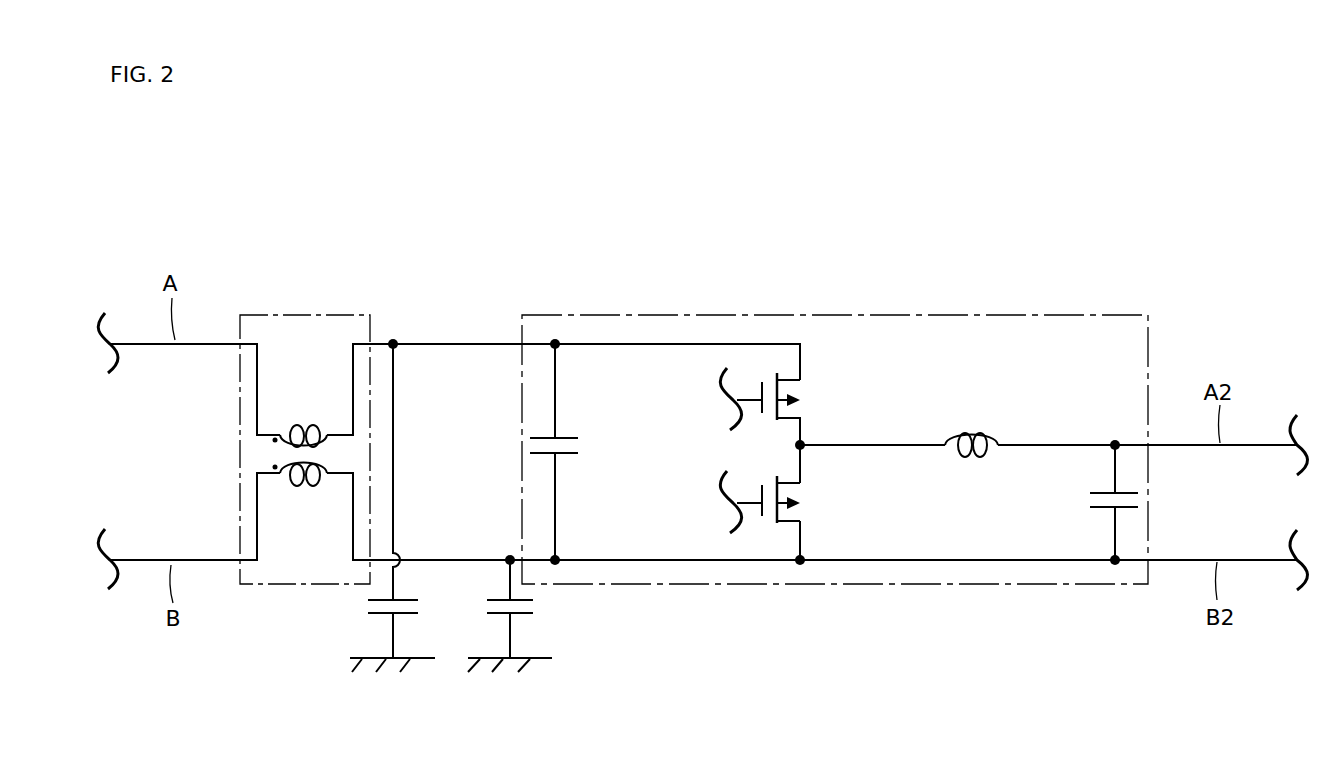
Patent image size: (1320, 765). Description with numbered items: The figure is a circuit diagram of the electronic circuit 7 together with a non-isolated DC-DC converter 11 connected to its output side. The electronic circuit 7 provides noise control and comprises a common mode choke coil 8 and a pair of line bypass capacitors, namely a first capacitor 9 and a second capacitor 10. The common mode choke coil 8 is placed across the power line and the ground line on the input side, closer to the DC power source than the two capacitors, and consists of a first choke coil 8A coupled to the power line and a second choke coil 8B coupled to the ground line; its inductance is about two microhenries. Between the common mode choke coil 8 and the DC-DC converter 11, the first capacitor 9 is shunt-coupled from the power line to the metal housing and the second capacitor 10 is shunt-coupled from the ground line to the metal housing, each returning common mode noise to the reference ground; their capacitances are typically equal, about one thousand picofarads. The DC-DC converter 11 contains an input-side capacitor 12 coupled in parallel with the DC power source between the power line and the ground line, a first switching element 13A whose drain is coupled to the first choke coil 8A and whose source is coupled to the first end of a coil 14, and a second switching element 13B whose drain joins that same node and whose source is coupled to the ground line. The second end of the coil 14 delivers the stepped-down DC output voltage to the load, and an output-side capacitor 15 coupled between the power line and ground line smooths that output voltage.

The electronic circuit 7 is at (433, 308).
The common mode choke coil 8 is at (313, 314).
The first choke coil 8A is at (302, 425).
The second choke coil 8B is at (308, 487).
The first capacitor 9 is at (382, 615).
The second capacitor 10 is at (520, 615).
The DC-DC converter 11 is at (848, 314).
The input-side capacitor 12 is at (568, 437).
The first switching element 13A is at (793, 410).
The second switching element 13B is at (793, 513).
The coil 14 is at (970, 430).
The output-side capacitor 15 is at (1100, 508).